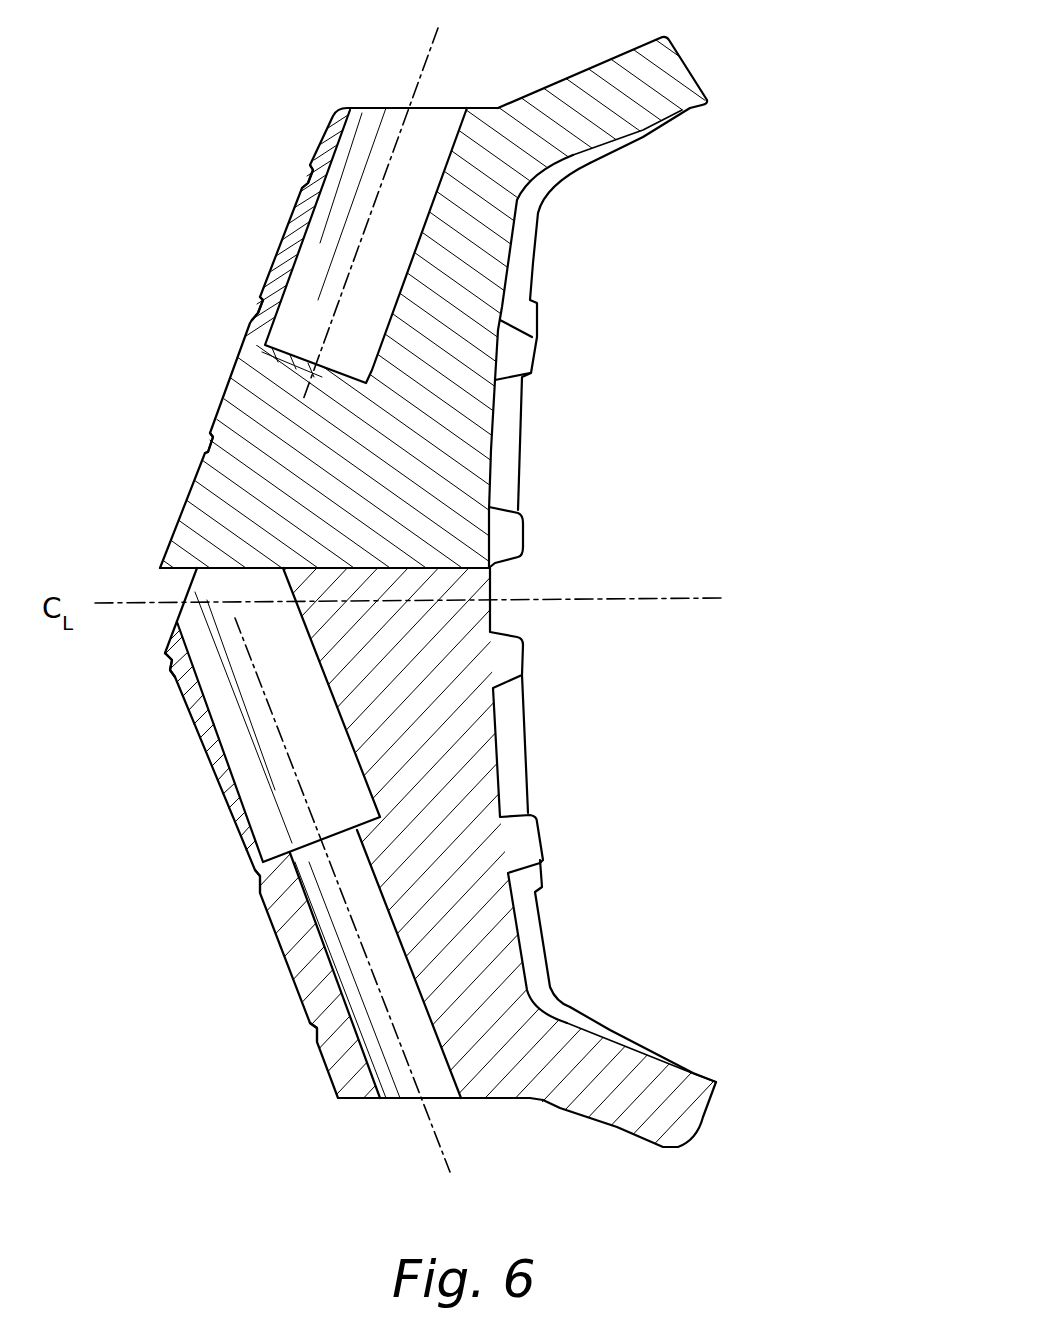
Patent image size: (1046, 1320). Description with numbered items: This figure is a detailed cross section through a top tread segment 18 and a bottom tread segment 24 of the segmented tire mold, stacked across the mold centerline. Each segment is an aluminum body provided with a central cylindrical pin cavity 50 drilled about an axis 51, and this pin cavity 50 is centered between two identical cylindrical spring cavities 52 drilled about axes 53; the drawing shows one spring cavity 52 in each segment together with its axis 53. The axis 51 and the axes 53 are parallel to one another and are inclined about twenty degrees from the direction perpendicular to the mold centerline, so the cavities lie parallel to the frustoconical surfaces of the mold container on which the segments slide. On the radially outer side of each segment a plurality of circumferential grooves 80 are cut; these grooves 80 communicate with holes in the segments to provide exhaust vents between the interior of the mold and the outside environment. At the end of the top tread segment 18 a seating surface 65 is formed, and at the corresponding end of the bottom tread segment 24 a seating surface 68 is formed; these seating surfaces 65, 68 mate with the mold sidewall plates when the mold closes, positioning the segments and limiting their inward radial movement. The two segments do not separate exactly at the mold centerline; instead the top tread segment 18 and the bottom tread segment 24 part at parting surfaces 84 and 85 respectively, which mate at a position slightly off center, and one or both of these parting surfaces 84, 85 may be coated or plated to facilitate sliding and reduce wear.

The top tread segment 18 is at (455, 462).
The bottom tread segment 24 is at (450, 730).
The pin cavity 50 is at (270, 764).
The axis of pin cavity 51 is at (433, 1133).
The spring cavity 52 is at (317, 285).
The axis of spring cavity 53 is at (425, 64).
The seating surface 65 is at (714, 78).
The seating surface 68 is at (716, 1118).
The circumferential groove 80 is at (313, 180).
The parting surface 84 is at (400, 560).
The parting surface 85 is at (428, 576).